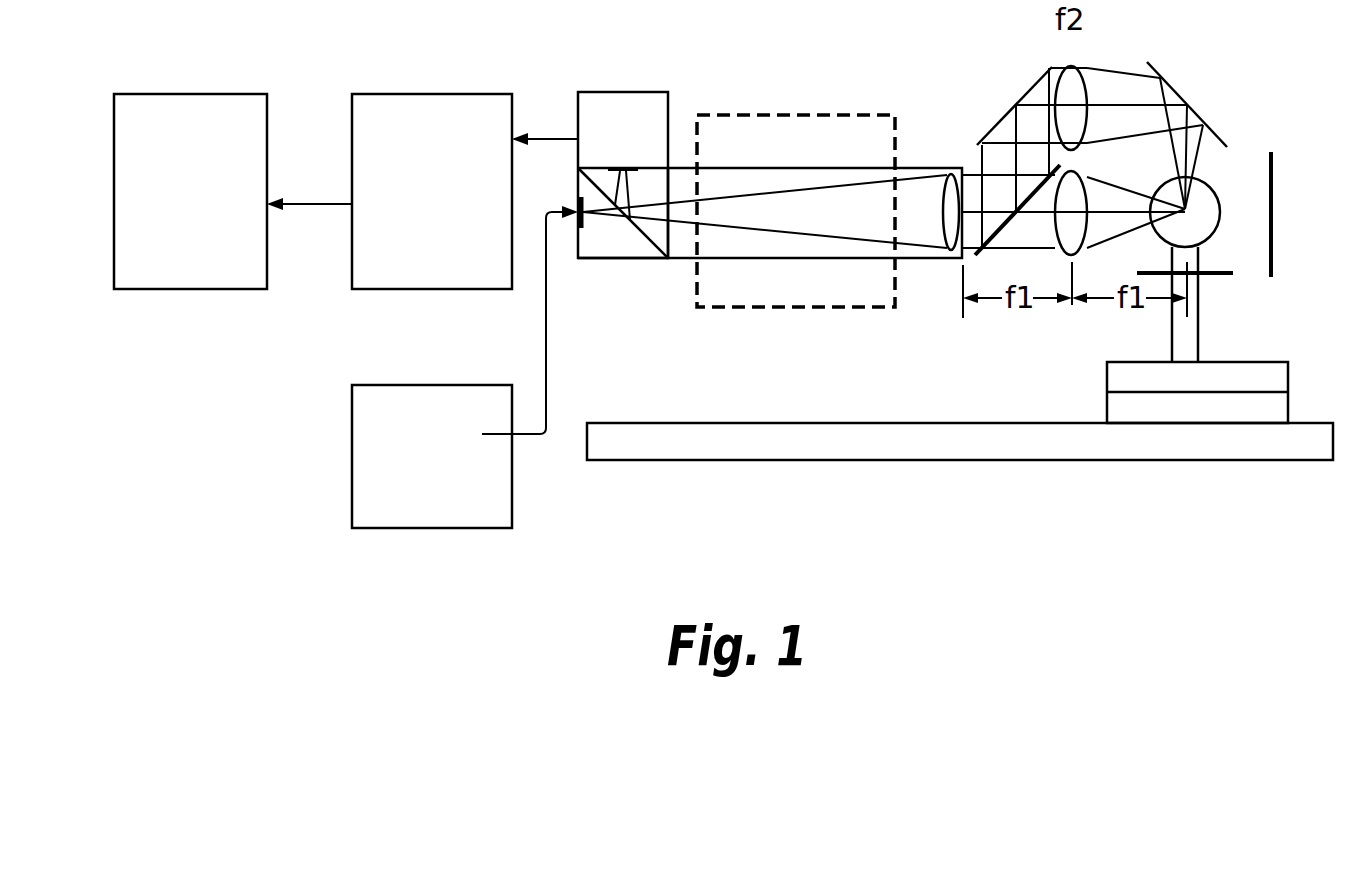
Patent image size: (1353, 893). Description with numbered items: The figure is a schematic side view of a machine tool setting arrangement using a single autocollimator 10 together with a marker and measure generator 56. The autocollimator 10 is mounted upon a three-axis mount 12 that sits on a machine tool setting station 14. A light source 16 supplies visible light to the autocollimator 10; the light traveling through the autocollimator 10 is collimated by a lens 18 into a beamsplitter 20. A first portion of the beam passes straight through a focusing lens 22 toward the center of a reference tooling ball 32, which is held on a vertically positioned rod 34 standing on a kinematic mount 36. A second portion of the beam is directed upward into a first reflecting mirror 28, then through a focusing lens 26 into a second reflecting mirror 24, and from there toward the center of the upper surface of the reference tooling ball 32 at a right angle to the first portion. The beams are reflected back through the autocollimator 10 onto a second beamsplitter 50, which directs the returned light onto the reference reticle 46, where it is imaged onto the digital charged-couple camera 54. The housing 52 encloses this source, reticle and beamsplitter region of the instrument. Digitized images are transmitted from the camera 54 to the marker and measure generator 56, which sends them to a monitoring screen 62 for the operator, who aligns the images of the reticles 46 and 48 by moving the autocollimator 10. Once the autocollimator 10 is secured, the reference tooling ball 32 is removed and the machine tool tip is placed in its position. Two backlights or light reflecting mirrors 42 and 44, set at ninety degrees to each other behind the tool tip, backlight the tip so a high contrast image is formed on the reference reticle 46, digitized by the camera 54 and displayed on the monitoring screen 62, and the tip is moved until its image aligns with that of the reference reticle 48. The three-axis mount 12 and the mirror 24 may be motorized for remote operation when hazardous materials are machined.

The autocollimator 10 is at (737, 255).
The three-axis mount 12 is at (833, 113).
The machine tool setting station 14 is at (804, 453).
The light source 16 is at (451, 482).
The lens 18 is at (945, 240).
The beamsplitter 20 is at (1010, 242).
The focusing lens 22 is at (1085, 248).
The mirror 24 is at (1185, 97).
The focusing lens 26 is at (1072, 68).
The first reflecting mirror 28 is at (1028, 97).
The reference tooling ball 32 is at (1217, 190).
The vertically positioned rod 34 is at (1200, 302).
The kinematic mount 36 is at (1289, 403).
The backlight or light reflecting mirror 42 is at (1275, 207).
The backlight or light reflecting mirror 44 is at (1210, 272).
The reference reticle 46 is at (637, 167).
The reference reticle 48 is at (582, 222).
The second beamsplitter 50 is at (638, 232).
The housing 52 is at (643, 259).
The digital charged-couple camera 54 is at (643, 147).
The marker and measure generator 56 is at (449, 207).
The monitoring screen 62 is at (212, 207).